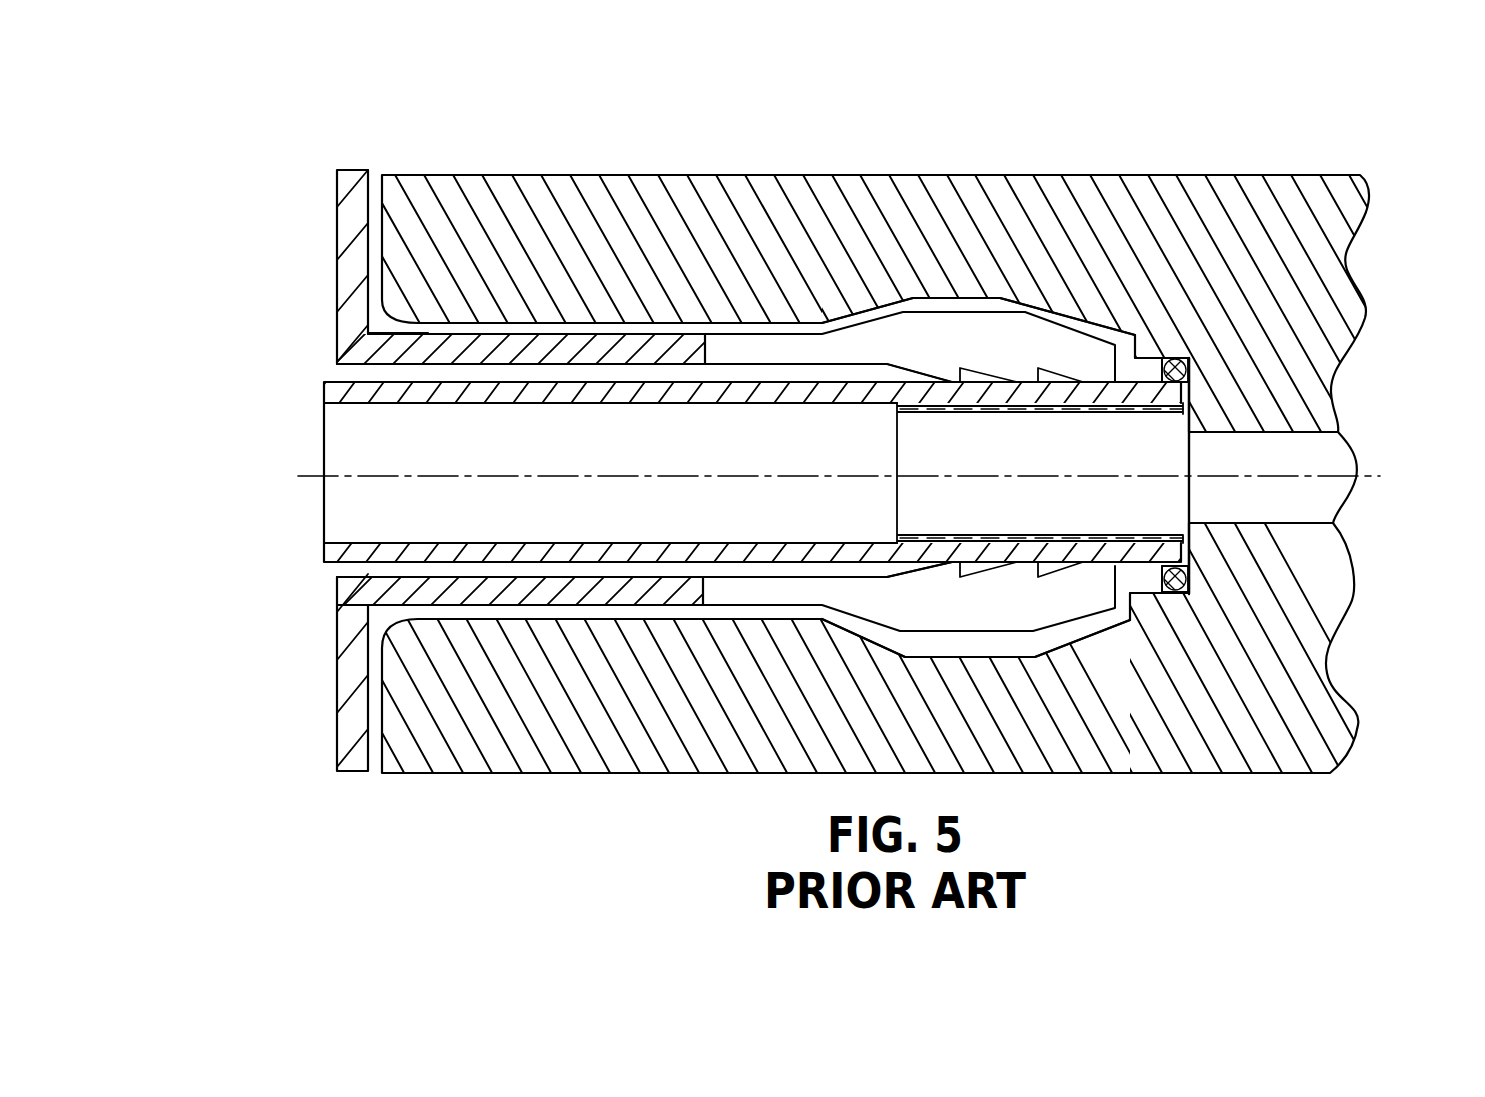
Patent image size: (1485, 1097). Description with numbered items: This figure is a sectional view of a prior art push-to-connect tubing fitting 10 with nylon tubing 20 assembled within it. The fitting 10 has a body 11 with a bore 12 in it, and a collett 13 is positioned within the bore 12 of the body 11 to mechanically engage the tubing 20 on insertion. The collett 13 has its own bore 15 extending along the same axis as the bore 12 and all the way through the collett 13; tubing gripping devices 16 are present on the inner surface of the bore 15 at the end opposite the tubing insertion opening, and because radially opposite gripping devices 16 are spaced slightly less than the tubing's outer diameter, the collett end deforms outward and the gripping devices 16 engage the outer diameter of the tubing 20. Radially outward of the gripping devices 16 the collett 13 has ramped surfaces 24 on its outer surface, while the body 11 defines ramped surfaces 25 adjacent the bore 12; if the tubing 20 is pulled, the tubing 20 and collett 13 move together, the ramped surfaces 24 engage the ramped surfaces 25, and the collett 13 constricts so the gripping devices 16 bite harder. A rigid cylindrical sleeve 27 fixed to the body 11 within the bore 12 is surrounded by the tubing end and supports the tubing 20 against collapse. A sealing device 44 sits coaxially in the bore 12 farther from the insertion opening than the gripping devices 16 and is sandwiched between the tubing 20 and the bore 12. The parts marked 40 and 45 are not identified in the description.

The push-to-connect tubing fitting 10 is at (1177, 142).
The body 11 is at (693, 175).
The bore 12 is at (379, 305).
The collett 13 is at (337, 250).
The bore of the collett 15 is at (337, 370).
The tubing gripping devices 16 is at (1060, 373).
The nylon tubing 20 is at (357, 450).
The ramped surfaces of the collett 24 is at (880, 317).
The ramped surfaces of the body 25 is at (855, 316).
The rigid cylindrical sleeve 27 is at (1195, 437).
The fitting 40 is at (557, 467).
The sealing device 44 is at (1177, 357).
The fluid passage 45 is at (1374, 498).